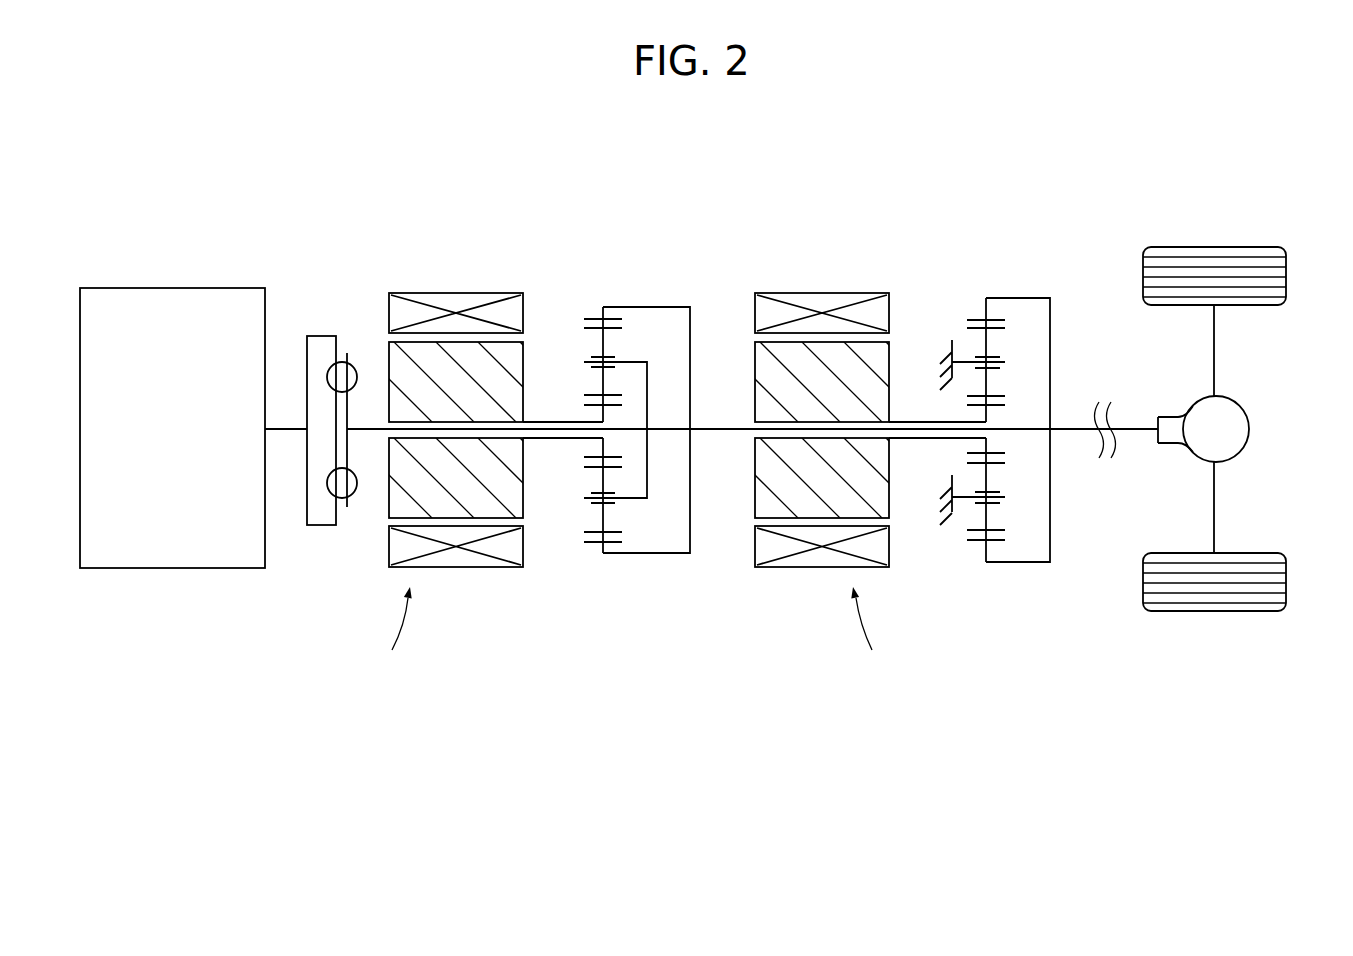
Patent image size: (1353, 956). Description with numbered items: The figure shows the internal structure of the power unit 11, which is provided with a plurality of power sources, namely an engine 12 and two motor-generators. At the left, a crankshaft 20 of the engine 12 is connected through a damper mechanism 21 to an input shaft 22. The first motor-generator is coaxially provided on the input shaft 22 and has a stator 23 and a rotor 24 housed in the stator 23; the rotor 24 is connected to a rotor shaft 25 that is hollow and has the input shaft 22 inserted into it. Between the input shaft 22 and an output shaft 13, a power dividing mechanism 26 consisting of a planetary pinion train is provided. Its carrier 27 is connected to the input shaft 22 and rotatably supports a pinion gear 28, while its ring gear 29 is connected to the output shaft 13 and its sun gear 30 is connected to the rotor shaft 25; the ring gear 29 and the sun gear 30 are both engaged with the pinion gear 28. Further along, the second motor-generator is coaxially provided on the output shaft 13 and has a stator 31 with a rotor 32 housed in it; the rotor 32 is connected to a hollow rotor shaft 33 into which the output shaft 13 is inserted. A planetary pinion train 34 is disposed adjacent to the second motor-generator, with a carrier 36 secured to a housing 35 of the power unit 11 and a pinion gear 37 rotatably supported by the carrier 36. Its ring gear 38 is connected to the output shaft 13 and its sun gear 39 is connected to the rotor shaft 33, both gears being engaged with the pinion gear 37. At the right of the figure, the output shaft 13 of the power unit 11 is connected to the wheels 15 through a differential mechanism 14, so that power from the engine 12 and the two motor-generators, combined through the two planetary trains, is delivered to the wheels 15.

The power unit 11 is at (160, 172).
The engine 12 is at (212, 288).
The output shaft 13 is at (725, 428).
The differential mechanism 14 is at (1245, 400).
The wheels 15 is at (1262, 247).
The crankshaft 20 is at (268, 428).
The damper mechanism 21 is at (322, 336).
The input shaft 22 is at (368, 428).
The stator 23 is at (436, 293).
The rotor 24 is at (475, 360).
The rotor shaft 25 is at (555, 421).
The power dividing mechanism 26 is at (640, 282).
The carrier 27 is at (642, 360).
The pinion gear 28 is at (600, 522).
The ring gear 29 is at (594, 545).
The sun gear 30 is at (600, 443).
The stator 31 is at (800, 295).
The rotor 32 is at (840, 360).
The rotor shaft 33 is at (905, 422).
The planetary pinion train 34 is at (1027, 282).
The housing 35 is at (945, 350).
The carrier 36 is at (1004, 362).
The pinion gear 37 is at (975, 517).
The ring gear 38 is at (978, 545).
The sun gear 39 is at (975, 442).